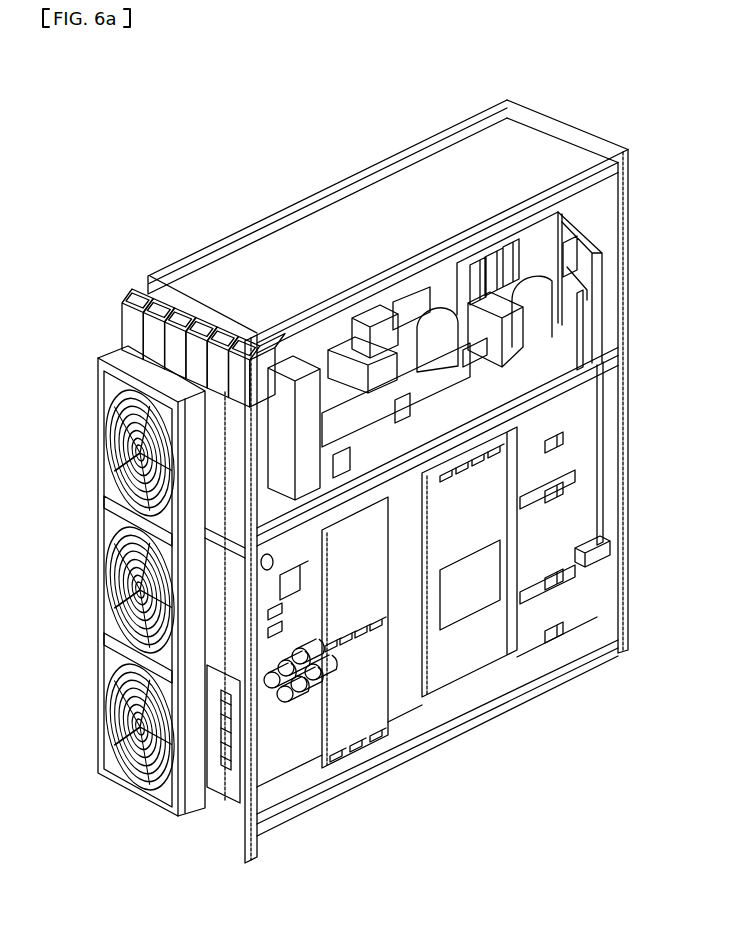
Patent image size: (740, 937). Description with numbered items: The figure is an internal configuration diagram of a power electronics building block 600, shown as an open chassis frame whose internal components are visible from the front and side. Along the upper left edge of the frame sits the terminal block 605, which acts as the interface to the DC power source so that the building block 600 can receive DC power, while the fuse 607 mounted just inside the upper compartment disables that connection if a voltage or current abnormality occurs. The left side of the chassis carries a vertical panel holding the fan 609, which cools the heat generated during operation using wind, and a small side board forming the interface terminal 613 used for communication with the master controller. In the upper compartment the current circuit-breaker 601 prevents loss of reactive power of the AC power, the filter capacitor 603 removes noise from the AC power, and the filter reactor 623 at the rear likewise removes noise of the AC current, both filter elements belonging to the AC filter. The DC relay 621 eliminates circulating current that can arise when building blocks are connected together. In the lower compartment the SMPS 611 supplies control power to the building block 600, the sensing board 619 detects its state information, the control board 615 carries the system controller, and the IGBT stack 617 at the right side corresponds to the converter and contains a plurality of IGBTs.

The power electronics building block 600 is at (84, 121).
The current circuit-breaker 601 is at (395, 333).
The filter capacitor 603 is at (345, 345).
The terminal block 605 is at (152, 332).
The fuse 607 is at (303, 455).
The fan 609 is at (103, 580).
The SMPS 611 is at (363, 700).
The interface terminal 613 is at (223, 753).
The control board 615 is at (470, 598).
The IGBT stack 617 is at (515, 540).
The sensing board 619 is at (487, 473).
The DC relay 621 is at (368, 468).
The filter reactor 623 is at (535, 258).